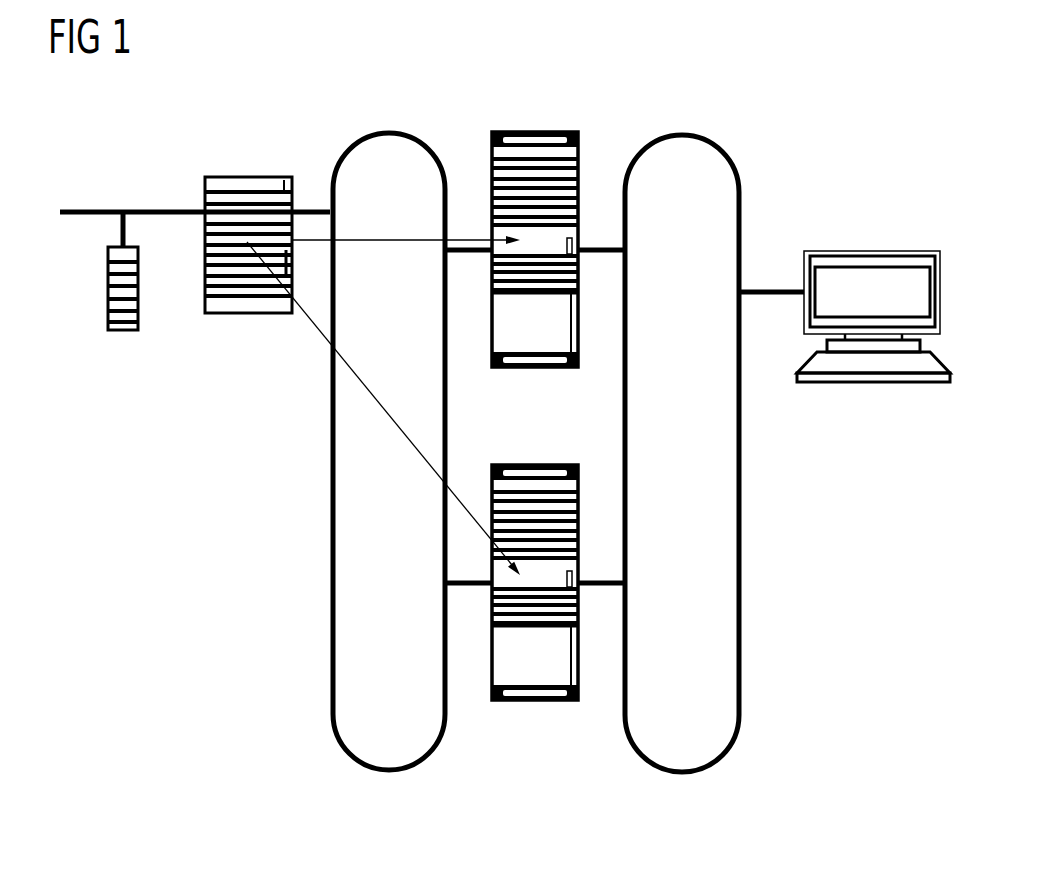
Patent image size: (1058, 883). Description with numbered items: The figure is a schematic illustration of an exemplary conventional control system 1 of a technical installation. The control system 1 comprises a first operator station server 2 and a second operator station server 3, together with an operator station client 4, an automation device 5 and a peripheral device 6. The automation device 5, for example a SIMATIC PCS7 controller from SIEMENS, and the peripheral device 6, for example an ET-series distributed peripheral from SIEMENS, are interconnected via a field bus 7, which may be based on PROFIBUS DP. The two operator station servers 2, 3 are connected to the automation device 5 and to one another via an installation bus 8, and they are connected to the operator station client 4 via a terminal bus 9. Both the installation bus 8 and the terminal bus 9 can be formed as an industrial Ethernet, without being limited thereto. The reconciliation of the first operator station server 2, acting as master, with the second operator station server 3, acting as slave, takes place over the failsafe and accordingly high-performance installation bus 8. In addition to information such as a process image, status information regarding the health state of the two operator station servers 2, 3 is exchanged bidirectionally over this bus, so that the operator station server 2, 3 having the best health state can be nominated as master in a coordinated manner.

The control system 1 is at (207, 563).
The first operator station server 2 is at (535, 131).
The second operator station server 3 is at (535, 703).
The operator station client 4 is at (870, 250).
The automation device 5 is at (250, 176).
The peripheral device 6 is at (121, 332).
The field bus 7 is at (93, 210).
The installation bus 8 is at (389, 131).
The terminal bus 9 is at (681, 133).